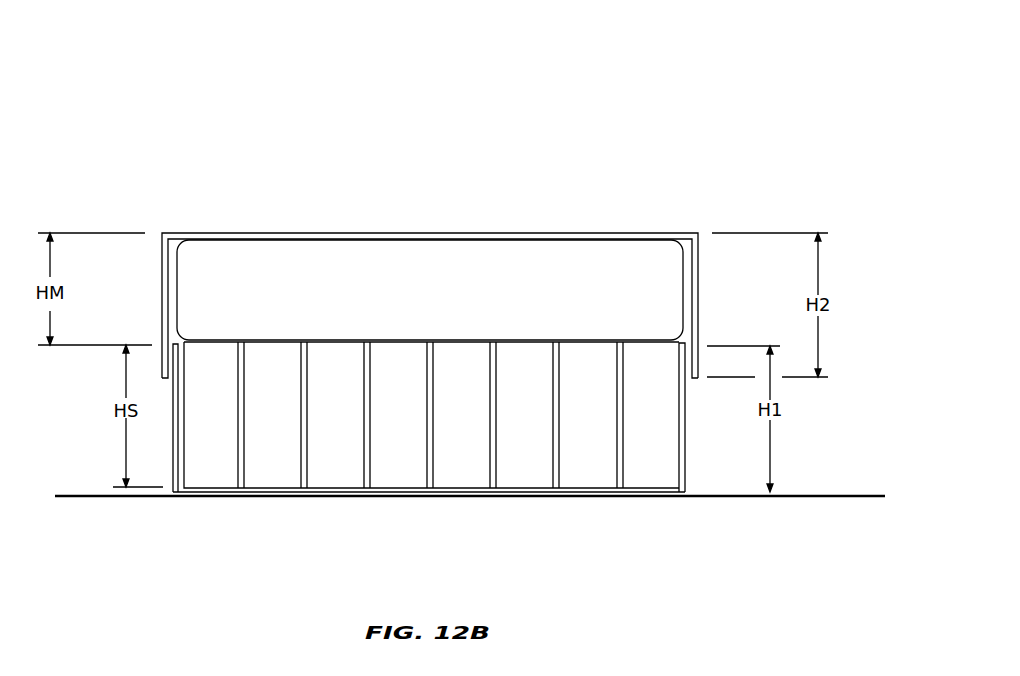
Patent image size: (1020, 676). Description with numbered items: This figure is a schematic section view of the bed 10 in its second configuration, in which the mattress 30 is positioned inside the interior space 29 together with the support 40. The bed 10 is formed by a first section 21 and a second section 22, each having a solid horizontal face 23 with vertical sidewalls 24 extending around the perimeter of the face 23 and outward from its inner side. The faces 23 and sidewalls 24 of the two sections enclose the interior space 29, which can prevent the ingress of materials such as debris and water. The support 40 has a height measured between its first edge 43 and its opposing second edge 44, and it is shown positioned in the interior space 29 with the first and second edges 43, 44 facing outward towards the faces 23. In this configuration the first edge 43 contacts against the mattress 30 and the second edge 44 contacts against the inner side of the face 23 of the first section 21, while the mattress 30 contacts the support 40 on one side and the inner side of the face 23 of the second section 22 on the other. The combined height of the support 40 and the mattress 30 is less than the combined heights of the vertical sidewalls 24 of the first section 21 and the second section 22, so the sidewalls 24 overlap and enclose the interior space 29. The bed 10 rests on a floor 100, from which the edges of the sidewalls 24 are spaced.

The bed 10 is at (212, 126).
The first section 21 is at (652, 496).
The second section 22 is at (655, 232).
The horizontal face 23 is at (215, 233).
The vertical sidewalls 24 is at (700, 302).
The interior space 29 is at (500, 281).
The mattress 30 is at (377, 239).
The support 40 is at (362, 442).
The first edge 43 is at (364, 341).
The second edge 44 is at (492, 486).
The floor 100 is at (81, 526).